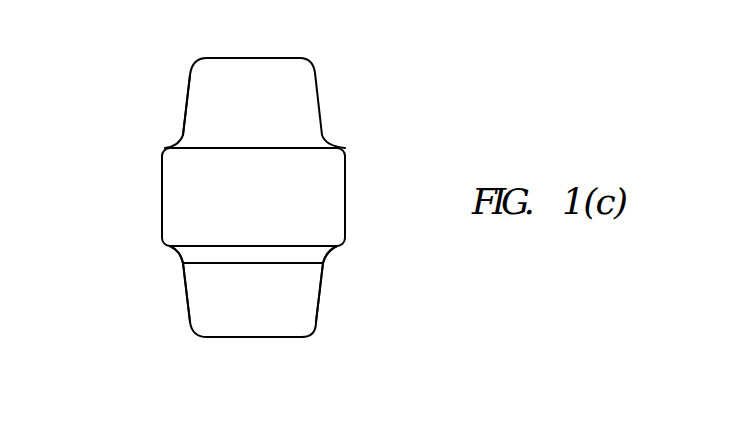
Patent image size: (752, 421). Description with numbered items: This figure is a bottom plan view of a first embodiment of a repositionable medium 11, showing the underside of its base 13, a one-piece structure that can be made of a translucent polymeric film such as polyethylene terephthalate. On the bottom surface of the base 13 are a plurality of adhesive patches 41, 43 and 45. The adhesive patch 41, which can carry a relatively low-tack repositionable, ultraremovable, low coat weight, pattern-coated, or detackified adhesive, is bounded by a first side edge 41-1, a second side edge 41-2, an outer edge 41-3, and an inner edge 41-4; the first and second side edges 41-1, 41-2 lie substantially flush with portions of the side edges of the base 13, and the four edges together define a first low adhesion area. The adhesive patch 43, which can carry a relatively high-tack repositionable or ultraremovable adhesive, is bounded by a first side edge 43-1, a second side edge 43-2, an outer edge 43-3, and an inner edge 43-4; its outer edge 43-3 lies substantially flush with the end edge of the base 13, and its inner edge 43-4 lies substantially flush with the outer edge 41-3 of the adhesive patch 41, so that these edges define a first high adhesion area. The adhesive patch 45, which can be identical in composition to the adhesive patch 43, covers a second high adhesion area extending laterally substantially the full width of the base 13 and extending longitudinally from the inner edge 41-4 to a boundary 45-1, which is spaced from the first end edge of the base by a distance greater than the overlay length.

The repositionable medium 11 is at (245, 217).
The base 13 is at (330, 91).
The adhesive patch 45 is at (308, 170).
The boundary 45-1 is at (218, 148).
The adhesive patch 41 is at (206, 254).
The first side edge 41-1 is at (333, 256).
The second side edge 41-2 is at (172, 252).
The outer edge 41-3 is at (305, 263).
The inner edge 41-4 is at (308, 244).
The adhesive patch 43 is at (288, 315).
The first side edge 43-1 is at (318, 308).
The second side edge 43-2 is at (188, 315).
The outer edge 43-3 is at (253, 338).
The inner edge 43-4 is at (228, 265).